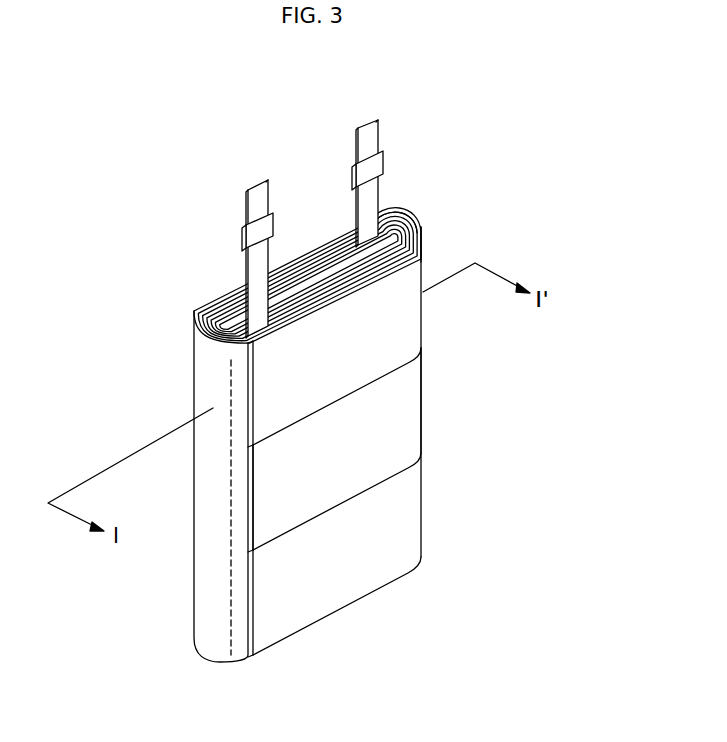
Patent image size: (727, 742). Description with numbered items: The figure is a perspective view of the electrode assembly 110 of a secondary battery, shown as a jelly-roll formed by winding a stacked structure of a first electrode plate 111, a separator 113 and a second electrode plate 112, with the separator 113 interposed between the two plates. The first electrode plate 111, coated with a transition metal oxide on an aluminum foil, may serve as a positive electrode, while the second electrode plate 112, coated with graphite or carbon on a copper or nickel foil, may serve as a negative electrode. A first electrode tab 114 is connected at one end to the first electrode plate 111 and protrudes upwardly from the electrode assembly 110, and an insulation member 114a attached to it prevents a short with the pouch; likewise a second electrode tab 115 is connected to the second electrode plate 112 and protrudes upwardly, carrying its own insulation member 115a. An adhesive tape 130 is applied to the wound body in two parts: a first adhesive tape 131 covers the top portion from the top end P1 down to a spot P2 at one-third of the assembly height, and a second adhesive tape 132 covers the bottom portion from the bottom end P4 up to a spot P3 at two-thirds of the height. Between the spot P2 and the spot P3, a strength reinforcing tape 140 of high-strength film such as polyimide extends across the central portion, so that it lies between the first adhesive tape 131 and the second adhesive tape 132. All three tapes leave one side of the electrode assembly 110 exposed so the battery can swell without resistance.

The electrode assembly 110 is at (125, 81).
The first electrode plate 111 is at (422, 229).
The second electrode plate 112 is at (393, 204).
The separator 113 is at (414, 214).
The first electrode tab 114 is at (362, 123).
The insulation member 114a is at (380, 167).
The second electrode tab 115 is at (258, 188).
The insulation member 115a is at (241, 236).
The adhesive tape 130 is at (517, 341).
The first adhesive tape 131 is at (407, 317).
The second adhesive tape 132 is at (405, 498).
The strength reinforcing tape 140 is at (283, 510).
The top end P1 is at (243, 342).
The spot P2 is at (245, 447).
The spot P3 is at (245, 551).
The bottom end P4 is at (245, 657).